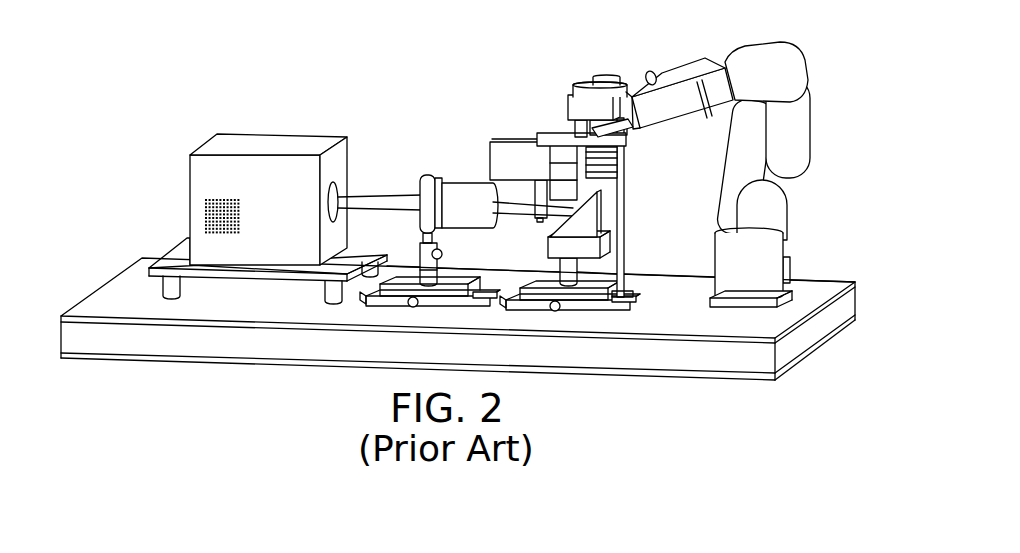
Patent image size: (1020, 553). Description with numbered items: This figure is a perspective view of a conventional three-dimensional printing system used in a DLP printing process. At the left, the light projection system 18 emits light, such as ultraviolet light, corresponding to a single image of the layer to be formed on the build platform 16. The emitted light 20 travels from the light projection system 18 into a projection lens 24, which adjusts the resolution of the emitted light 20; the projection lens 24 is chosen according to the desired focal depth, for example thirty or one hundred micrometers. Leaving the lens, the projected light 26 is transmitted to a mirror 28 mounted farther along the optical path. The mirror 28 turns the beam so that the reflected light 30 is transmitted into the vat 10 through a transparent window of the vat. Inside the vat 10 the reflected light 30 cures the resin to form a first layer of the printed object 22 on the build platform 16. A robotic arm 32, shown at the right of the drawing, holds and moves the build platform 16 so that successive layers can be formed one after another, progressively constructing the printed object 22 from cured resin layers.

The vat 10 is at (550, 133).
The build platform 16 is at (613, 87).
The light projection system 18 is at (190, 175).
The emitted light 20 is at (383, 197).
The printed object 22 is at (607, 127).
The projection lens 24 is at (458, 182).
The projected light 26 is at (510, 215).
The mirror 28 is at (598, 215).
The reflected light 30 is at (618, 165).
The robotic arm 32 is at (677, 63).